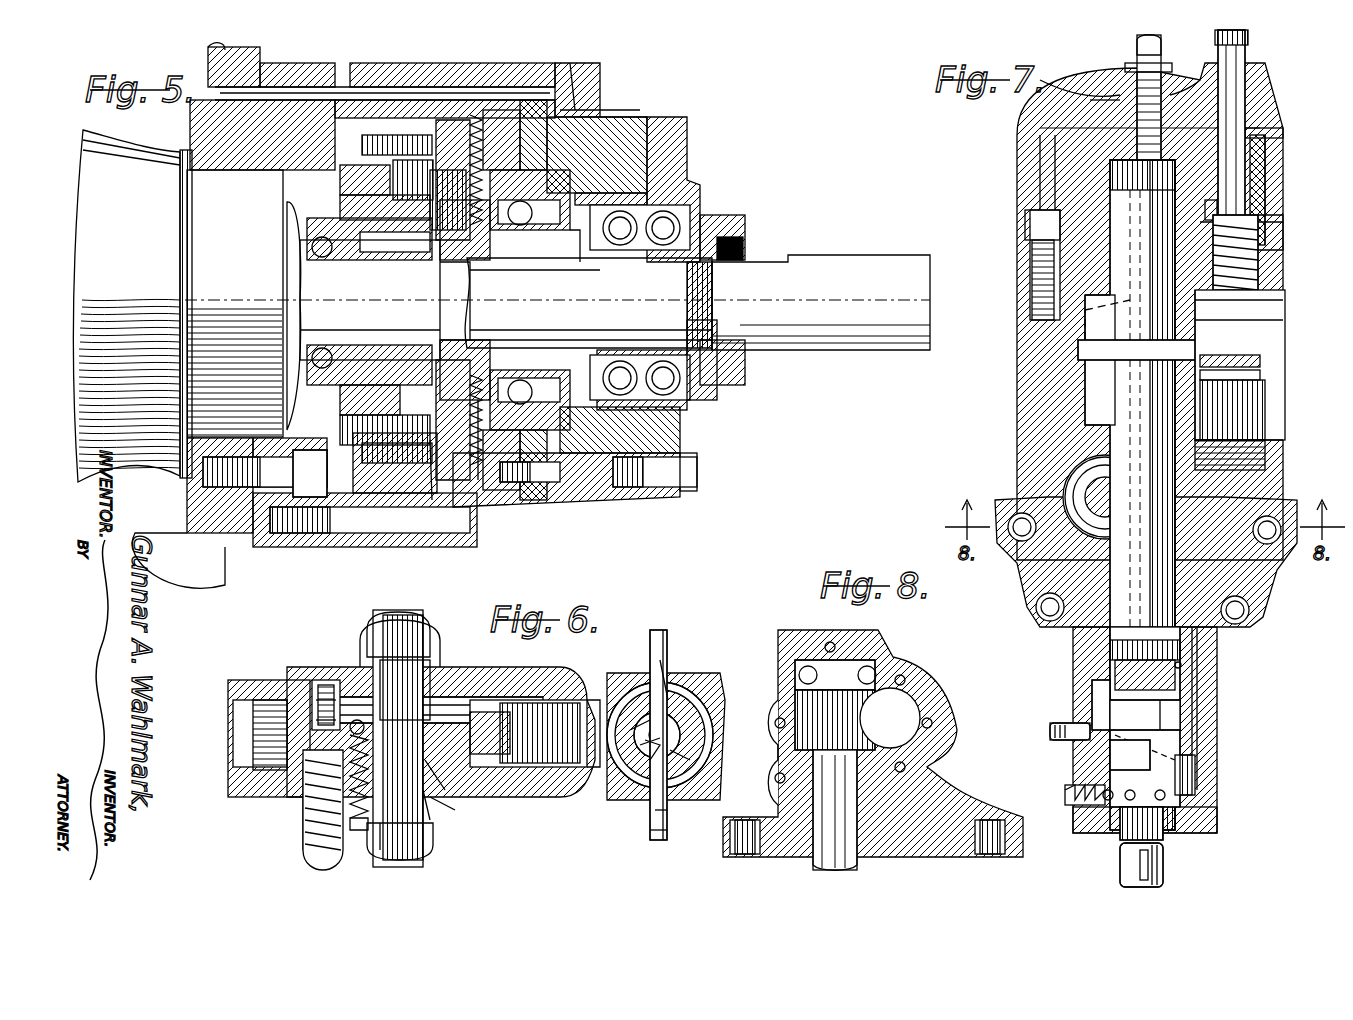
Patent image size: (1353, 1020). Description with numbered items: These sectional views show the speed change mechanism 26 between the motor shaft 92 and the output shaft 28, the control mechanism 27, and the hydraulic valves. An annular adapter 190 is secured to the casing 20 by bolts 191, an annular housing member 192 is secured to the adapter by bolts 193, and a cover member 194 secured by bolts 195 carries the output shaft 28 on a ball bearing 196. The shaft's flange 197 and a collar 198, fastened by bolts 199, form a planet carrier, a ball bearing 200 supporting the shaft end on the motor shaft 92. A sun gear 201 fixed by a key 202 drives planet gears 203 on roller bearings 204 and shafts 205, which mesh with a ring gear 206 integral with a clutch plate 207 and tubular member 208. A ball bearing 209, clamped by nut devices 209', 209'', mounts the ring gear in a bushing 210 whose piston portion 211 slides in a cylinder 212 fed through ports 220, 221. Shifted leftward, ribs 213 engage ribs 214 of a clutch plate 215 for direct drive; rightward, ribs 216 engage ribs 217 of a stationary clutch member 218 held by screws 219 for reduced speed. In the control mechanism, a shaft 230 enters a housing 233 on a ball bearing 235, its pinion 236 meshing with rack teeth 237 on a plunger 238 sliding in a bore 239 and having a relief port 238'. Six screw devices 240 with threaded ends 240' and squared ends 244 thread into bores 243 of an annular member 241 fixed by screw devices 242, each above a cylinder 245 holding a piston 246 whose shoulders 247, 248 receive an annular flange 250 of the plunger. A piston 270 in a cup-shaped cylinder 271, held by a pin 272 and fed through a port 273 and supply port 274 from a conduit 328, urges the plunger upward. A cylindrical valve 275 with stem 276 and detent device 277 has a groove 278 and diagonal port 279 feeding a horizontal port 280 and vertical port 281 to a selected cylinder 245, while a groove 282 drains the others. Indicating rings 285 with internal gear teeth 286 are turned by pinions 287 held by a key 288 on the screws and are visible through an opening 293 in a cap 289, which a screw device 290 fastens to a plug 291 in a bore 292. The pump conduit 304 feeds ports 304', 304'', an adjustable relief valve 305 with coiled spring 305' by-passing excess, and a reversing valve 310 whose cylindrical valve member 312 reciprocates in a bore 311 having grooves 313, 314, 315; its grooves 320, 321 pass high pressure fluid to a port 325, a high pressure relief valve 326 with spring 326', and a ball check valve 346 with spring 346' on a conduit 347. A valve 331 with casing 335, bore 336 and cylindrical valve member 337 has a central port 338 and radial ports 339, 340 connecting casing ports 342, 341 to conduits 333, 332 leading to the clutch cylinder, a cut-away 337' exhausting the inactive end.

In FIG. 5, the casing 20 is at (238, 47).
In FIG. 5, the speed change mechanism 26 is at (455, 155).
In FIG. 5, the output shaft 28 is at (826, 275).
In FIG. 5, the motor shaft 92 is at (300, 286).
In FIG. 5, the annular adapter 190 is at (290, 540).
In FIG. 5, the bolts 191 is at (205, 478).
In FIG. 5, the annular housing member 192 is at (540, 500).
In FIG. 5, the bolts 193 is at (380, 533).
In FIG. 5, the cover member 194 is at (700, 140).
In FIG. 5, the bolts 195 is at (665, 490).
In FIG. 5, the ball bearing 196 is at (712, 215).
In FIG. 5, the radially extending flange 197 is at (430, 460).
In FIG. 5, the collar 198 is at (330, 395).
In FIG. 5, the bolts 199 is at (345, 425).
In FIG. 5, the ball bearing 200 is at (350, 400).
In FIG. 5, the sun gear 201 is at (400, 250).
In FIG. 5, the key 202 is at (410, 325).
In FIG. 5, the planet gears 203 is at (395, 135).
In FIG. 5, the roller bearings 204 is at (350, 180).
In FIG. 5, the shafts 205 is at (345, 200).
In FIG. 5, the ring gear 206 is at (440, 120).
In FIG. 5, the clutch plate 207 is at (470, 240).
In FIG. 5, the tubular member 208 is at (500, 260).
In FIG. 5, the ball bearing 209 is at (530, 300).
In FIG. 5, the screw-threaded nut device 209' is at (581, 269).
In FIG. 5, the screw-threaded nut device 209'' is at (640, 307).
In FIG. 5, the bushing 210 is at (595, 150).
In FIG. 5, the piston portion 211 is at (600, 140).
In FIG. 5, the cylinder 212 is at (645, 150).
In FIG. 5, the annular ribs 213 is at (495, 345).
In FIG. 5, the annular ribs 214 is at (420, 330).
In FIG. 5, the clutch plate 215 is at (480, 420).
In FIG. 5, the annular ribs 216 is at (490, 130).
In FIG. 5, the annular ribs 217 is at (525, 125).
In FIG. 5, the stationary clutch member 218 is at (572, 100).
In FIG. 5, the screws 219 is at (520, 480).
In FIG. 5, the port 220 is at (370, 92).
In FIG. 5, the port 221 is at (580, 63).
In FIG. 7, the control mechanism 27 is at (1283, 330).
In FIG. 8, the shaft 230 is at (855, 805).
In FIG. 7, the shaft 230 is at (1085, 525).
In FIG. 8, the housing 233 is at (940, 700).
In FIG. 7, the housing 233 is at (1030, 460).
In FIG. 8, the ball bearing 235 is at (880, 670).
In FIG. 8, the pinion 236 is at (915, 685).
In FIG. 7, the pinion 236 is at (1030, 560).
In FIG. 8, the rack teeth 237 is at (870, 792).
In FIG. 7, the rack teeth 237 is at (1150, 530).
In FIG. 8, the cylindrical plunger 238 is at (903, 720).
In FIG. 7, the cylindrical plunger 238 is at (1062, 495).
In FIG. 7, the relief port 238' is at (1042, 320).
In FIG. 7, the bore 239 is at (1105, 405).
In FIG. 7, the screw devices 240 is at (1268, 127).
In FIG. 7, the threaded lower ends 240' is at (1273, 282).
In FIG. 7, the annular member 241 is at (1262, 262).
In FIG. 7, the screw devices 242 is at (1035, 250).
In FIG. 7, the threaded bores 243 is at (1262, 222).
In FIG. 7, the squared upper ends 244 is at (1250, 37).
In FIG. 7, the cylinder 245 is at (1235, 362).
In FIG. 7, the piston 246 is at (1250, 395).
In FIG. 7, the shoulder 247 is at (1225, 330).
In FIG. 7, the shoulder 248 is at (1240, 385).
In FIG. 7, the annular flange 250 is at (1085, 350).
In FIG. 7, the piston 270 is at (1080, 655).
In FIG. 7, the cylinder 271 is at (1110, 670).
In FIG. 7, the pin 272 is at (1182, 665).
In FIG. 7, the port 273 is at (1095, 695).
In FIG. 7, the supply port 274 is at (1085, 760).
In FIG. 7, the cylindrical valve 275 is at (1185, 715).
In FIG. 7, the stem 276 is at (1165, 870).
In FIG. 7, the detent device 277 is at (1105, 825).
In FIG. 7, the annular groove 278 is at (1085, 785).
In FIG. 7, the diagonally extending port 279 is at (1185, 745).
In FIG. 7, the horizontal port 280 is at (1190, 780).
In FIG. 7, the vertical port 281 is at (1195, 690).
In FIG. 7, the groove 282 is at (1165, 825).
In FIG. 7, the indicating rings 285 is at (1030, 150).
In FIG. 7, the internal gear teeth 286 is at (1262, 140).
In FIG. 7, the pinion 287 is at (1255, 205).
In FIG. 7, the key 288 is at (1262, 240).
In FIG. 7, the cap 289 is at (1095, 100).
In FIG. 7, the screw device 290 is at (1140, 90).
In FIG. 7, the plug 291 is at (1125, 150).
In FIG. 7, the bore 292 is at (1110, 165).
In FIG. 7, the rectangular opening 293 is at (1270, 185).
In FIG. 6, the conduit 328 is at (395, 625).
In FIG. 7, the conduit 328 is at (1060, 740).
In FIG. 6, the conduit 304 is at (319, 685).
In FIG. 6, the connecting port 304' is at (286, 685).
In FIG. 6, the connecting port 304'' is at (286, 665).
In FIG. 6, the adjustable relief valve 305 is at (269, 738).
In FIG. 6, the coiled spring 305' is at (296, 810).
In FIG. 6, the reversing valve 310 is at (430, 680).
In FIG. 6, the cylindrical bore 311 is at (420, 840).
In FIG. 6, the cylindrical valve member 312 is at (385, 690).
In FIG. 6, the annular groove 313 is at (490, 690).
In FIG. 6, the groove 314 is at (440, 775).
In FIG. 6, the annular groove 315 is at (405, 830).
In FIG. 6, the annular groove 320 is at (425, 810).
In FIG. 6, the annular groove 321 is at (440, 660).
In FIG. 6, the port 325 is at (450, 800).
In FIG. 6, the high pressure relief valve 326 is at (528, 707).
In FIG. 6, the coiled spring 326' is at (597, 711).
In FIG. 6, the valve 331 is at (700, 690).
In FIG. 6, the conduit 332 is at (652, 832).
In FIG. 6, the conduit 333 is at (652, 640).
In FIG. 6, the casing 335 is at (700, 700).
In FIG. 6, the vertical valve bore 336 is at (705, 720).
In FIG. 6, the cylindrical valve member 337 is at (616, 706).
In FIG. 6, the cut-away 337' is at (717, 775).
In FIG. 6, the central vertical port 338 is at (655, 745).
In FIG. 6, the radial port 339 is at (675, 700).
In FIG. 6, the radial port 340 is at (650, 740).
In FIG. 6, the casing port 341 is at (667, 820).
In FIG. 6, the casing port 342 is at (668, 680).
In FIG. 6, the ball check valve 346 is at (336, 720).
In FIG. 6, the coiled spring 346' is at (372, 848).
In FIG. 6, the conduit 347 is at (305, 805).